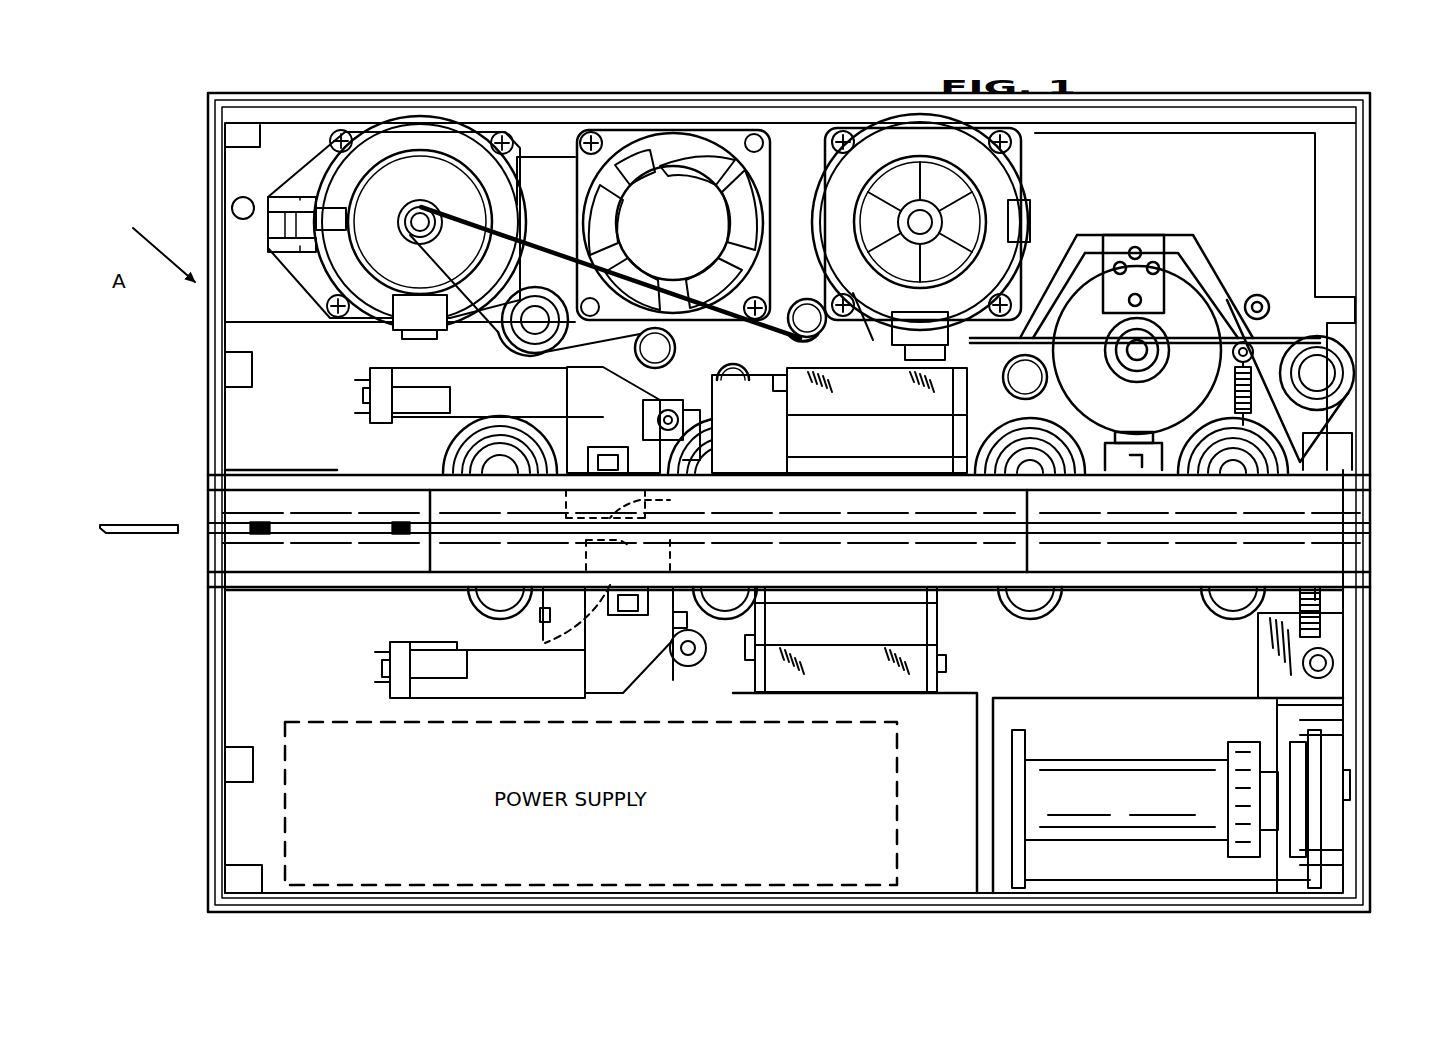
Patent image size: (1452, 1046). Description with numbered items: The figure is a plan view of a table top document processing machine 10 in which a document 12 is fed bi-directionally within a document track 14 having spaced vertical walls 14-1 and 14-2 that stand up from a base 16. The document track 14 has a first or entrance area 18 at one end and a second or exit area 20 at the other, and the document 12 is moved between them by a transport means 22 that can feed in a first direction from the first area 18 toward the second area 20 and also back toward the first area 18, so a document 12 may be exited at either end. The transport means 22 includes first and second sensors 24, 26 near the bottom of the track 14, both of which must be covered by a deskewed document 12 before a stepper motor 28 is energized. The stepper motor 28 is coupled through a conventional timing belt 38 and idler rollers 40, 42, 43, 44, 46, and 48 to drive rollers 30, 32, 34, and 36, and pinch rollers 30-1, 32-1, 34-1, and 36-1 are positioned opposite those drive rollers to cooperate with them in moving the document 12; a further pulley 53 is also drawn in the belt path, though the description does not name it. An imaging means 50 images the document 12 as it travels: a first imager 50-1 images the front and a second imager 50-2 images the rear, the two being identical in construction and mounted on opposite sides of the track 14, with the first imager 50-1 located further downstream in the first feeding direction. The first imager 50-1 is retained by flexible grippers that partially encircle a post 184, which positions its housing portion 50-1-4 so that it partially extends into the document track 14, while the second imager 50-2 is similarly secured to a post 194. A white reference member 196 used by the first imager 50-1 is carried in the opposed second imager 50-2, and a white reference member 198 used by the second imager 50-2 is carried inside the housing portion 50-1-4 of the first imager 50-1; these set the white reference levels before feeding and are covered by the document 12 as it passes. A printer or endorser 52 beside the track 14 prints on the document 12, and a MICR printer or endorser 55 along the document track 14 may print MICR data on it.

The document processing machine 10 is at (185, 152).
The document 12 is at (135, 535).
The document track 14 is at (761, 542).
The vertical wall 14-1 is at (287, 555).
The vertical wall 14-2 is at (290, 495).
The base 16 is at (205, 797).
The first or entrance area 18 is at (200, 527).
The second or exit area 20 is at (1378, 527).
The transport means 22 is at (455, 437).
The first sensor 24 is at (260, 538).
The second sensor 26 is at (405, 536).
The stepper motor 28 is at (400, 135).
The drive roller 30 is at (490, 443).
The pinch roller 30-1 is at (470, 602).
The drive roller 32 is at (700, 432).
The pinch roller 32-1 is at (733, 600).
The drive roller 34 is at (980, 443).
The pinch roller 34-1 is at (1040, 603).
The drive roller 36 is at (1213, 425).
The pinch roller 36-1 is at (1228, 603).
The timing belt 38 is at (560, 252).
The idler roller 40 is at (492, 238).
The idler roller 42 is at (657, 340).
The idler roller 43 is at (735, 368).
The idler roller 44 is at (1035, 375).
The idler roller 46 is at (1340, 380).
The idler roller 48 is at (793, 318).
The imaging means 50 is at (745, 500).
The first imaging device or imager 50-1 is at (690, 605).
The second imaging device or imager 50-2 is at (630, 430).
The housing portion 50-1-4 is at (560, 628).
The printer or endorser 52 is at (857, 663).
The idler pulley 53 is at (808, 305).
The MICR printer or endorser 55 is at (1192, 322).
The post 184 is at (692, 660).
The post 194 is at (640, 407).
The white reference member 196 is at (639, 503).
The white reference member 198 is at (586, 560).